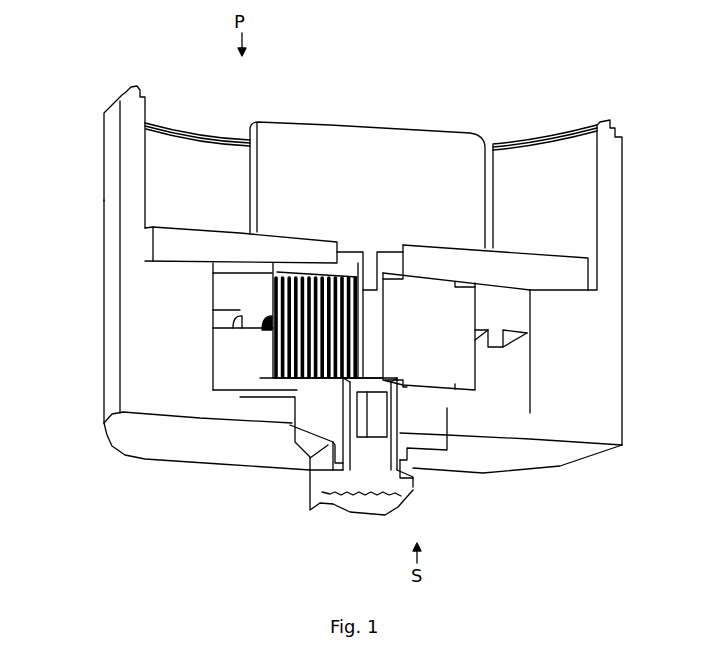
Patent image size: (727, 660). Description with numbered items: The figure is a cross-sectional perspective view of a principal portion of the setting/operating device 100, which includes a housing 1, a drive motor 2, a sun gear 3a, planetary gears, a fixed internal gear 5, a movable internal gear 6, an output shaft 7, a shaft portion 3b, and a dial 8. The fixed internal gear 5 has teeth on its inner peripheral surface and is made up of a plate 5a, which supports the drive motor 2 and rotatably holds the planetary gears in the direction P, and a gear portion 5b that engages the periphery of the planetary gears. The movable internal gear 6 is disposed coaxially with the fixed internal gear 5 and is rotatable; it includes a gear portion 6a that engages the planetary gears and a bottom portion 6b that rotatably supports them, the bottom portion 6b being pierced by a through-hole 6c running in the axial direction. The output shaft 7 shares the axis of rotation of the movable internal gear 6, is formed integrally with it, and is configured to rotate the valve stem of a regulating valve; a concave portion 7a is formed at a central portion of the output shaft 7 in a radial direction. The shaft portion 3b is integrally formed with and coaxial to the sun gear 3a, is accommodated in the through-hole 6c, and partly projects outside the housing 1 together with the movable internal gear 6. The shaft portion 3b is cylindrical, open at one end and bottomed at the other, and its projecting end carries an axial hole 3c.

The setting/operating device 100 is at (633, 98).
The housing 1 is at (115, 175).
The drive motor 2 is at (372, 145).
The fixed internal gear 5 is at (36, 231).
The plate 5a is at (163, 240).
The gear portion 5b is at (220, 282).
The sun gear 3a is at (368, 350).
The shaft portion 3b is at (388, 404).
The hole 3c is at (397, 436).
The movable internal gear 6 is at (30, 373).
The gear portion 6a is at (265, 360).
The bottom portion 6b is at (297, 388).
The through-hole 6c is at (413, 478).
The output shaft 7 is at (310, 490).
The concave portion 7a is at (343, 505).
The dial 8 is at (376, 420).